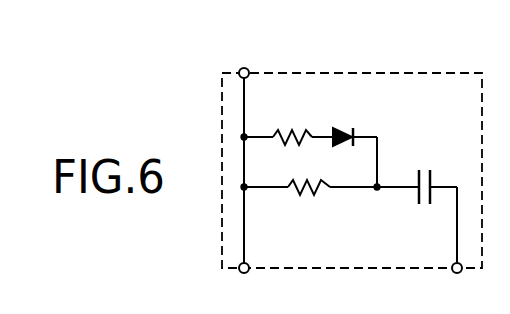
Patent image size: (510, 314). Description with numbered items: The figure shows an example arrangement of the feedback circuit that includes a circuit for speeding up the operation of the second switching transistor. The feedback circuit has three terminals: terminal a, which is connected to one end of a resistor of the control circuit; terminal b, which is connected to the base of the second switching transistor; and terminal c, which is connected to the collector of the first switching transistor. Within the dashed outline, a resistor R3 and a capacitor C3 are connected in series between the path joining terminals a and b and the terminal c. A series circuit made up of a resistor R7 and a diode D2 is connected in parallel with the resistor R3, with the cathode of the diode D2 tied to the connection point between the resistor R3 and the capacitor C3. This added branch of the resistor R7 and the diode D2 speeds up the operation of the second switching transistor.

The resistor R7 is at (292, 122).
The diode D2 is at (347, 122).
The resistor R3 is at (309, 204).
The capacitor C3 is at (423, 204).
The terminal a is at (243, 58).
The terminal b is at (245, 283).
The terminal c is at (457, 281).